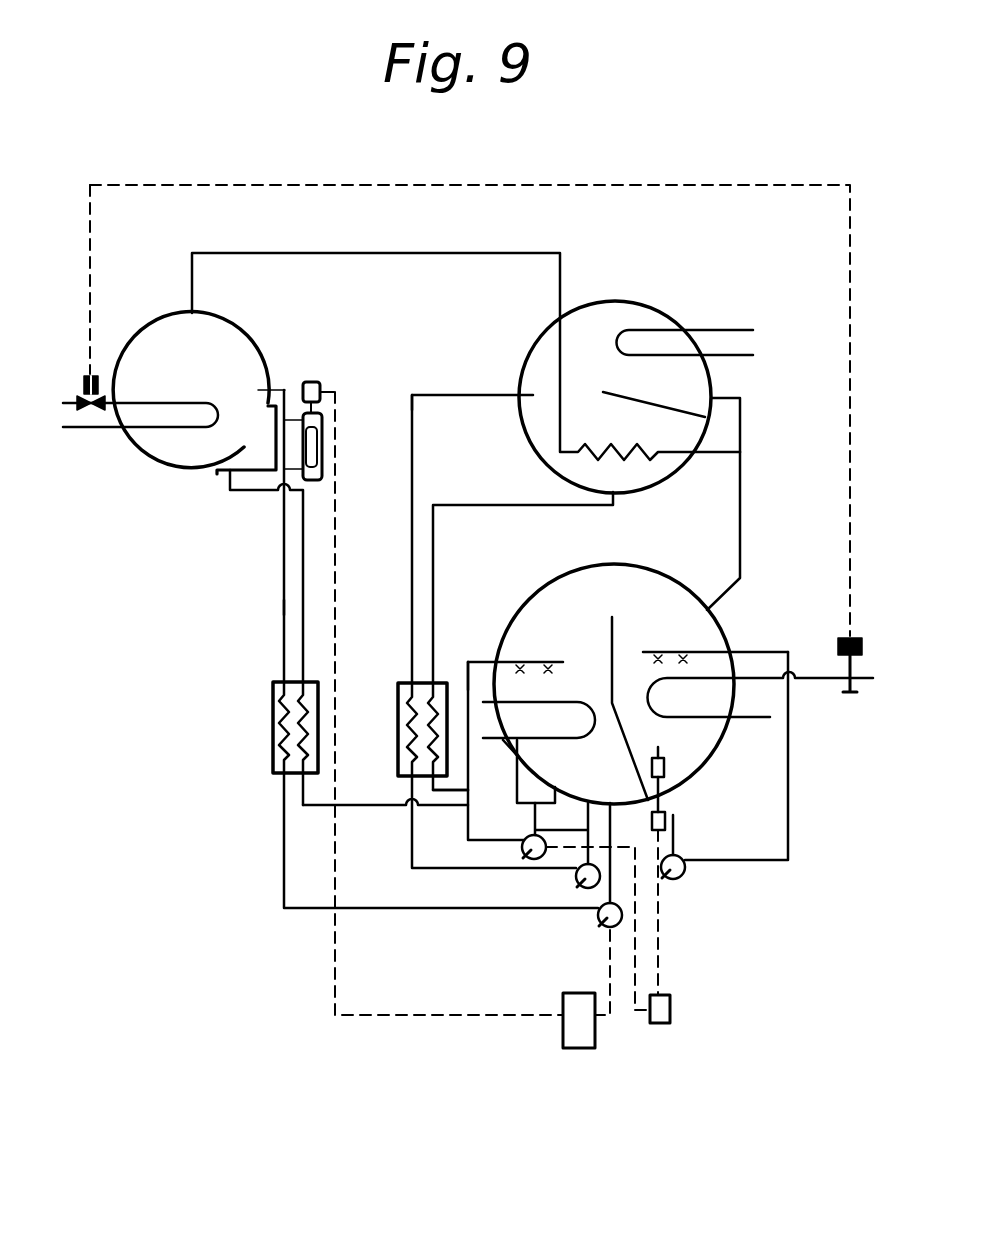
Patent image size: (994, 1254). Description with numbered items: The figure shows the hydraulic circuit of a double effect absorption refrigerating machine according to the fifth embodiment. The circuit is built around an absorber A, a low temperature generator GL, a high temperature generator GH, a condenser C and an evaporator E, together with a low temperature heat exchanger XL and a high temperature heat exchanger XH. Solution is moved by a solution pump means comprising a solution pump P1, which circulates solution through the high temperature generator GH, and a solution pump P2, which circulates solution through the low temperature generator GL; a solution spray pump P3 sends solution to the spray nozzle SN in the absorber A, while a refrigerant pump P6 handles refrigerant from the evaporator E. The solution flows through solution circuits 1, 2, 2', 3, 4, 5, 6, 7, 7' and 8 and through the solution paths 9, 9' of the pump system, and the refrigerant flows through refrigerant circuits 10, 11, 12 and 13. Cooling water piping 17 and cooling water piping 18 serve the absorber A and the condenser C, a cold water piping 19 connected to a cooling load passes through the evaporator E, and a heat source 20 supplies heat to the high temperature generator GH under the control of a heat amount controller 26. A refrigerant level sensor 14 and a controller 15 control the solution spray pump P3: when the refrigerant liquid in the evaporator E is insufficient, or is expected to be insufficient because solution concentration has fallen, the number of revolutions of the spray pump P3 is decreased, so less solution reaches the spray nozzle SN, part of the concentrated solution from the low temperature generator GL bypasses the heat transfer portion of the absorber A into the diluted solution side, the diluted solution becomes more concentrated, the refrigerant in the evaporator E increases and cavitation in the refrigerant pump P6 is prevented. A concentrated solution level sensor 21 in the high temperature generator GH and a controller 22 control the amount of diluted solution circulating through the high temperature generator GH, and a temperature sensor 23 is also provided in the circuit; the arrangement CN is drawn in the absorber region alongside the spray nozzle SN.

The solution circuit 1 is at (612, 830).
The solution circuit 2 is at (438, 684).
The solution circuit 2' is at (256, 608).
The solution circuit 3 is at (305, 576).
The solution circuit 4 is at (352, 808).
The solution circuit 5 is at (488, 506).
The solution circuit 6 is at (466, 792).
The solution circuit 7 is at (476, 753).
The solution circuit 7' is at (469, 646).
The solution circuit 8 is at (568, 827).
The solution path 9 is at (474, 650).
The solution path 9' is at (405, 402).
The refrigerant circuit 10 is at (673, 837).
The refrigerant circuit 11 is at (788, 796).
The refrigerant circuit 12 is at (742, 508).
The refrigerant circuit 13 is at (390, 252).
The refrigerant level sensor 14 is at (666, 822).
The controller 15 is at (670, 1010).
The cooling water piping 17 is at (517, 703).
The cooling water piping 18 is at (717, 330).
The cold water piping 19 is at (757, 718).
The heat source 20 is at (103, 427).
The concentrated solution level sensor 21 is at (310, 380).
The controller 22 is at (595, 1040).
The temperature sensor 23 is at (845, 694).
The heat amount controller 26 is at (97, 378).
The high temperature generator GH is at (170, 470).
The low temperature generator GL is at (543, 467).
The high temperature heat exchanger XH is at (271, 730).
The low temperature heat exchanger XL is at (397, 720).
The evaporator E is at (724, 614).
The condenser C is at (678, 380).
The absorber A is at (511, 754).
The spray nozzle SN is at (555, 661).
The absorber spray tray CN is at (690, 651).
The solution pump P1 is at (600, 928).
The solution pump P2 is at (578, 884).
The solution spray pump P3 is at (520, 850).
The refrigerant pump P6 is at (676, 880).